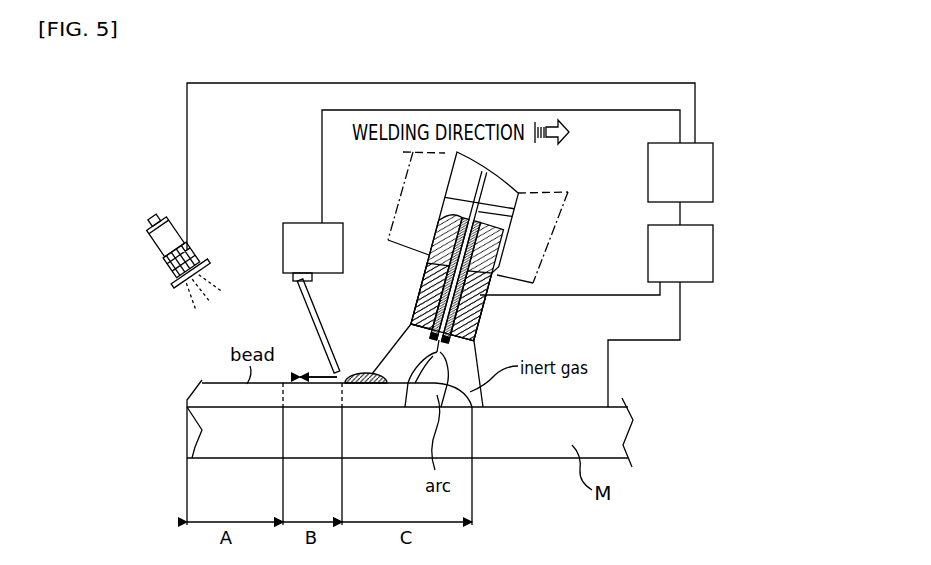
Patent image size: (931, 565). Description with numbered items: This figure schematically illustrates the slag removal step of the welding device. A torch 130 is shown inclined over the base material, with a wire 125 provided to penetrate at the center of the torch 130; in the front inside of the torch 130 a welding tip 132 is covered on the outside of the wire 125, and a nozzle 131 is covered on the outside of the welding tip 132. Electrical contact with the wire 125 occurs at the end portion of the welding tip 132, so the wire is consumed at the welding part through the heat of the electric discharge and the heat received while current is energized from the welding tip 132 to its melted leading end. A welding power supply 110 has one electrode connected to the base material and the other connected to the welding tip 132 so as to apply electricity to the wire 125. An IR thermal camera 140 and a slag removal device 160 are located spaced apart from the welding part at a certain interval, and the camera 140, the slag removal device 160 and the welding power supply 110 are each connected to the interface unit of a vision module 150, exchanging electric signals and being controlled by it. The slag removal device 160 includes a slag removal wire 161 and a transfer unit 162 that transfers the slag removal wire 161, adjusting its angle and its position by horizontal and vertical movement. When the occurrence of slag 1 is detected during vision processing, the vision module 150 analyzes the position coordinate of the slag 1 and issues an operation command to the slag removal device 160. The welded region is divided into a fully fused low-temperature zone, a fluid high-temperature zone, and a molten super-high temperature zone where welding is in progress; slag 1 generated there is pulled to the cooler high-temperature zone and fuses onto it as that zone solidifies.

The slag 1 is at (354, 373).
The welding power supply 110 is at (703, 265).
The wire 125 is at (455, 281).
The torch 130 is at (484, 251).
The nozzle 131 is at (457, 276).
The welding tip 132 is at (451, 298).
The IR thermal camera 140 is at (153, 216).
The vision module 150 is at (703, 170).
The slag removal device 160 is at (296, 256).
The slag removal wire 161 is at (323, 337).
The transfer unit 162 is at (297, 280).